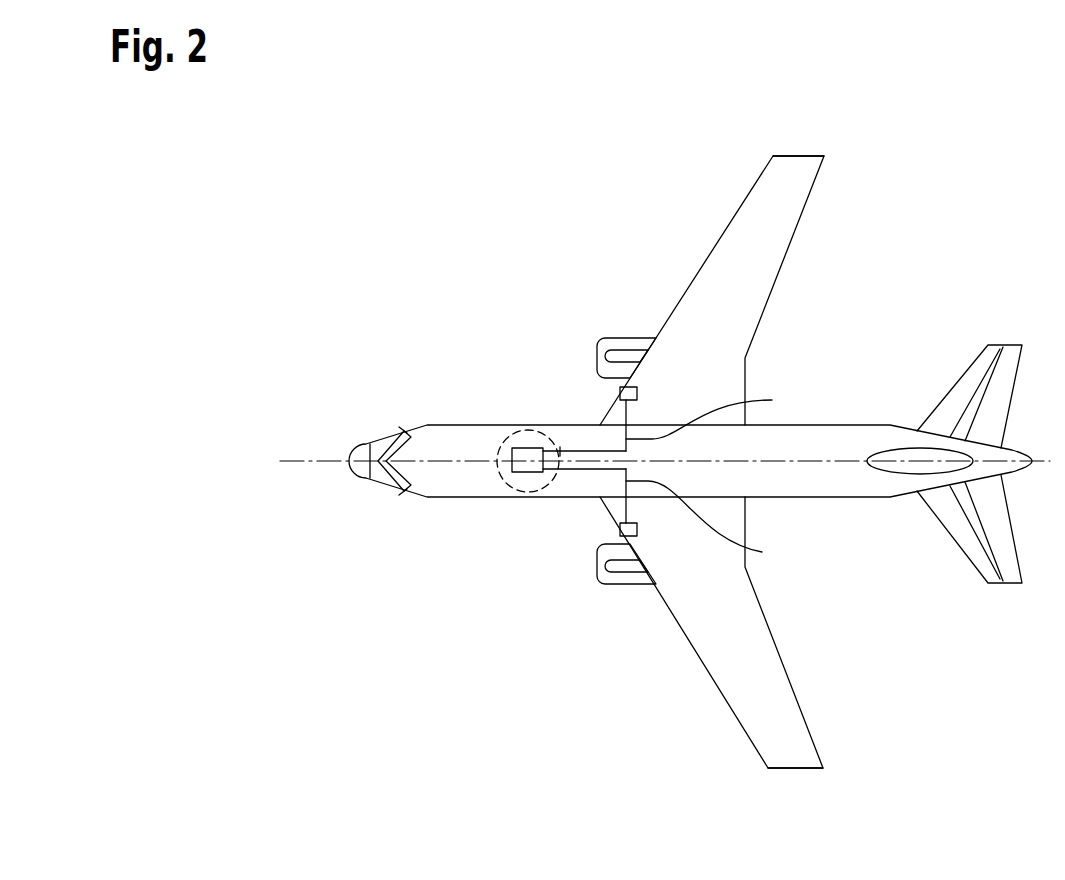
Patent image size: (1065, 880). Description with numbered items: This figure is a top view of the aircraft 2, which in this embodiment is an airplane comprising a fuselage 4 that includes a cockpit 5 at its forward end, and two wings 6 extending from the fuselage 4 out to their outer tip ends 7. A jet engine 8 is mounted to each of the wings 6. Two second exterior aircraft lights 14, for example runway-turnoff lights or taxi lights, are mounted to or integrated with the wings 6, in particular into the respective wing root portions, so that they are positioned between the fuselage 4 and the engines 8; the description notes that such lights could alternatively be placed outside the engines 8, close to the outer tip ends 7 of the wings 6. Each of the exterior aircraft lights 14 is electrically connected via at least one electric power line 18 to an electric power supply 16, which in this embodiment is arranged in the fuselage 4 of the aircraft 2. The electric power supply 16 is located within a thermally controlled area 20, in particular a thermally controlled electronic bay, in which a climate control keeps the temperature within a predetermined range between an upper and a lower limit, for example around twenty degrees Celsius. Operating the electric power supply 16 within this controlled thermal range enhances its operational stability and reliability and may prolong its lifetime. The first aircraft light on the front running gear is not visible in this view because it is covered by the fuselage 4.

The aircraft 2 is at (962, 238).
The fuselage 4 is at (823, 488).
The cockpit 5 is at (384, 420).
The wings 6 is at (722, 258).
The outer tip ends 7 is at (758, 145).
The jet engine 8 is at (575, 347).
The second exterior aircraft lights 14 is at (620, 392).
The electric power supply 16 is at (523, 450).
The electric power line 18 is at (715, 473).
The thermally controlled area 20 is at (477, 440).